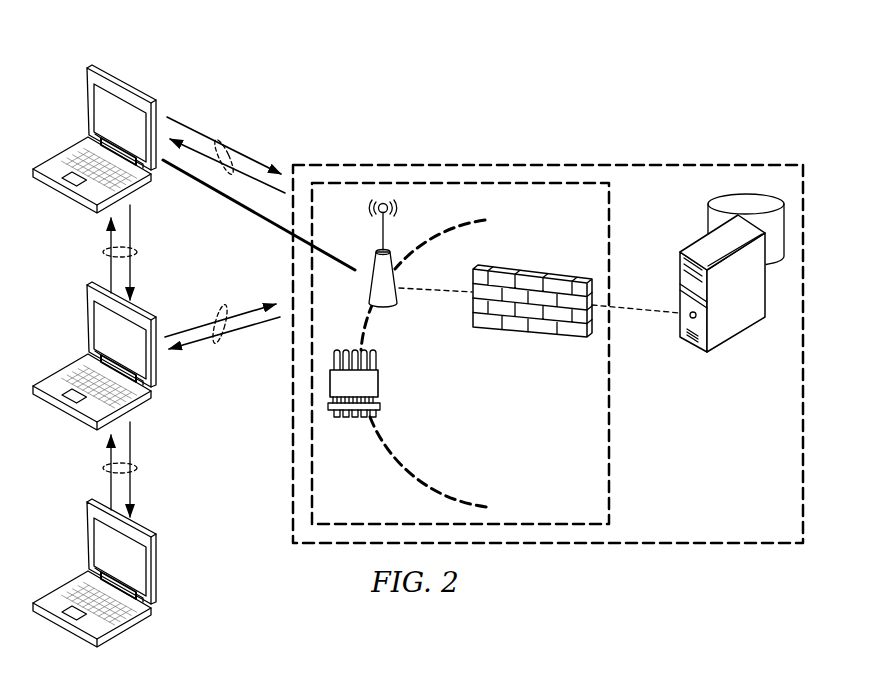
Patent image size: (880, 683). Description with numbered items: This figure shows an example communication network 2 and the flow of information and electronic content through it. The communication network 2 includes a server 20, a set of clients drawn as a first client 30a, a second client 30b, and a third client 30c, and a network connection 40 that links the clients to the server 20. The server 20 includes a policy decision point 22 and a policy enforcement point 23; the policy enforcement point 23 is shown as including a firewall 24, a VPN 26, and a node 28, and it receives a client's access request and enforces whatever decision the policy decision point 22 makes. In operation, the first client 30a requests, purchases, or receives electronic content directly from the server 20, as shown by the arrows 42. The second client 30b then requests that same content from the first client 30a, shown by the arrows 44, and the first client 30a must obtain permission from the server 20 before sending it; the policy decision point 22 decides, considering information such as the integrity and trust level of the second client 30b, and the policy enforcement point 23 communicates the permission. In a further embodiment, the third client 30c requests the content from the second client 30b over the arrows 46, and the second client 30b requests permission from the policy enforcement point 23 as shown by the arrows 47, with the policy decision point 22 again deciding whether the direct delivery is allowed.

The communication network 2 is at (183, 56).
The server 20 is at (604, 162).
The policy decision point (PDP) 22 is at (735, 334).
The policy enforcement point (PEP) 23 is at (613, 436).
The firewall 24 is at (536, 268).
The VPN 26 is at (380, 384).
The node 28 is at (388, 306).
The first client 30a is at (87, 106).
The second client 30b is at (87, 323).
The third client 30c is at (87, 540).
The network connection 40 is at (226, 199).
The arrows 42 is at (230, 146).
The arrows 44 is at (103, 252).
The arrows 46 is at (103, 468).
The arrows 47 is at (221, 346).